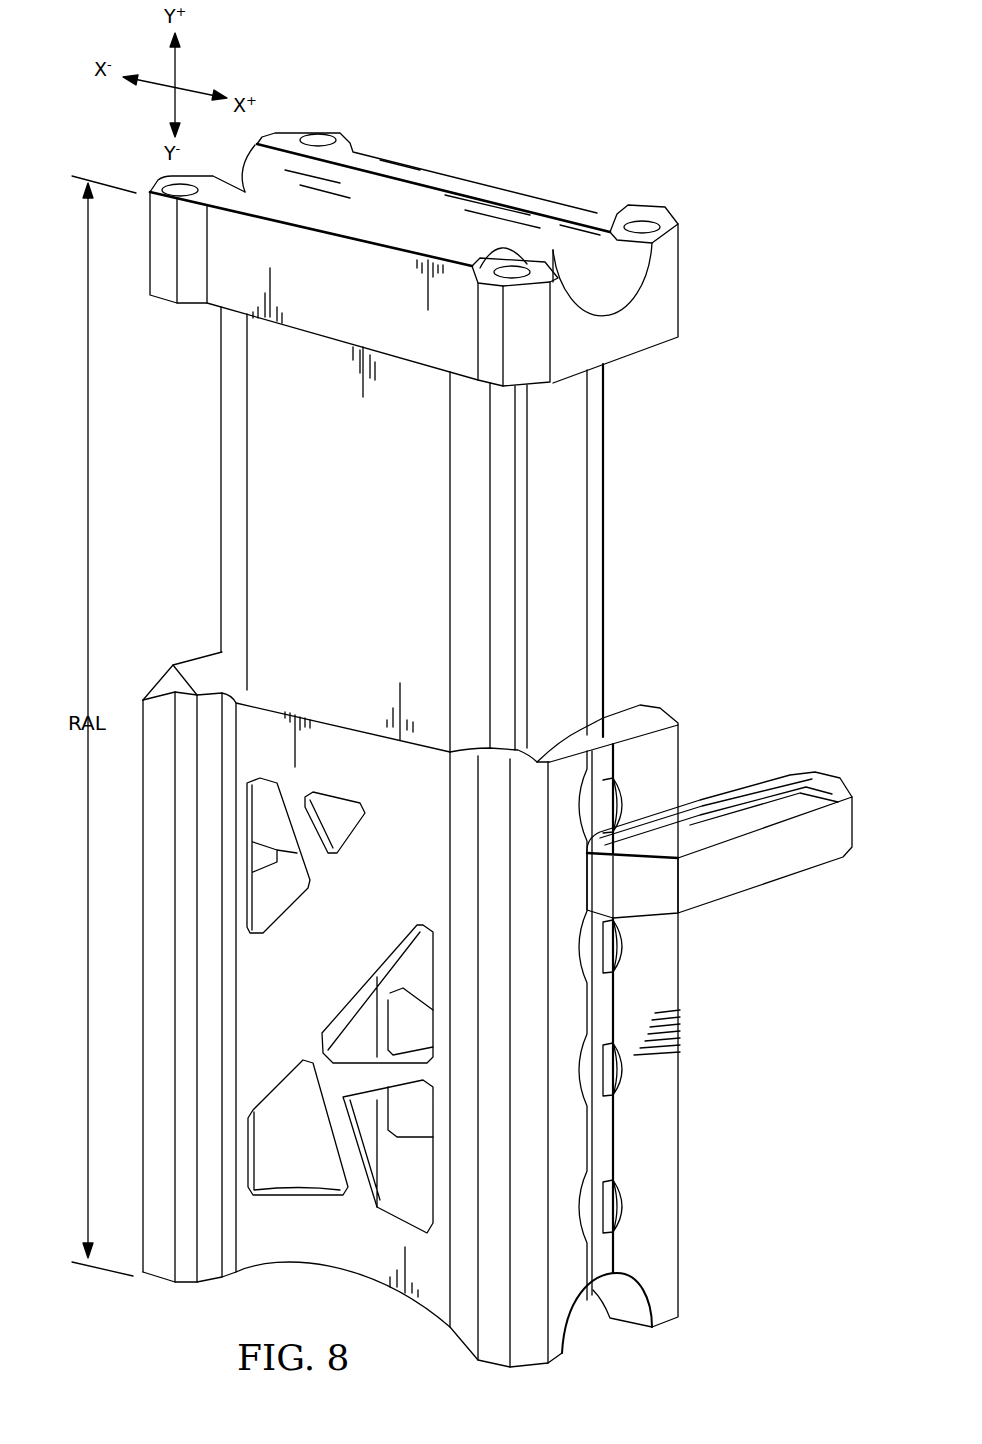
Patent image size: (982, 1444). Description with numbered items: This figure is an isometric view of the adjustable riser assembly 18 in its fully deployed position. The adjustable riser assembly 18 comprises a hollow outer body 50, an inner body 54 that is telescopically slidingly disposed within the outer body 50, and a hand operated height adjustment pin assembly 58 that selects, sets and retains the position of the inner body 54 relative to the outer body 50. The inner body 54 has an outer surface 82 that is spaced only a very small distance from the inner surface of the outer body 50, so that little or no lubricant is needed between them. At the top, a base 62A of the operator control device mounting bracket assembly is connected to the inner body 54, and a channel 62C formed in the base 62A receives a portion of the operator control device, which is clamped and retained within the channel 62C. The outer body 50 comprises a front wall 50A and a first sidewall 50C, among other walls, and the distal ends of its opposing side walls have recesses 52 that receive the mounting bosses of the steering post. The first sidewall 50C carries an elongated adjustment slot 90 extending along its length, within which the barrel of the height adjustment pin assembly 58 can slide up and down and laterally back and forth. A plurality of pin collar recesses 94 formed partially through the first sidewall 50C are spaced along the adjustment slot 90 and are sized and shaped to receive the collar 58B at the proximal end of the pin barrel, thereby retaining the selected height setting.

The adjustable riser assembly 18 is at (698, 365).
The hollow outer body 50 is at (682, 1235).
The front wall 50A is at (365, 1262).
The first sidewall 50C is at (668, 1140).
The recesses 52 is at (637, 1313).
The inner body 54 is at (606, 556).
The hand operated height adjustment pin assembly 58 is at (828, 772).
The collar 58B is at (583, 822).
The base 62A is at (683, 268).
The channel 62C is at (440, 202).
The outer surface 82 is at (605, 513).
The adjustment slot 90 is at (590, 1015).
The pin collar recesses 94 is at (627, 790).